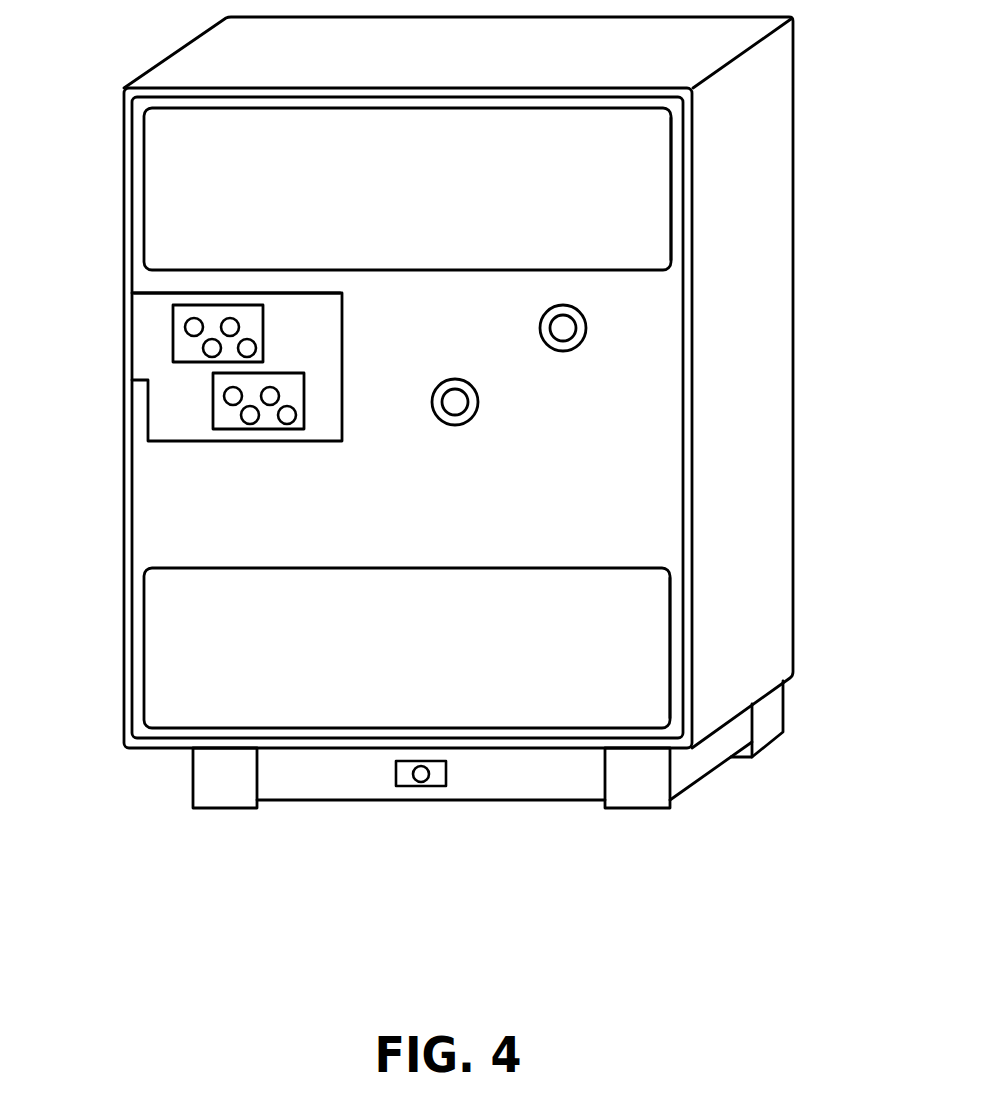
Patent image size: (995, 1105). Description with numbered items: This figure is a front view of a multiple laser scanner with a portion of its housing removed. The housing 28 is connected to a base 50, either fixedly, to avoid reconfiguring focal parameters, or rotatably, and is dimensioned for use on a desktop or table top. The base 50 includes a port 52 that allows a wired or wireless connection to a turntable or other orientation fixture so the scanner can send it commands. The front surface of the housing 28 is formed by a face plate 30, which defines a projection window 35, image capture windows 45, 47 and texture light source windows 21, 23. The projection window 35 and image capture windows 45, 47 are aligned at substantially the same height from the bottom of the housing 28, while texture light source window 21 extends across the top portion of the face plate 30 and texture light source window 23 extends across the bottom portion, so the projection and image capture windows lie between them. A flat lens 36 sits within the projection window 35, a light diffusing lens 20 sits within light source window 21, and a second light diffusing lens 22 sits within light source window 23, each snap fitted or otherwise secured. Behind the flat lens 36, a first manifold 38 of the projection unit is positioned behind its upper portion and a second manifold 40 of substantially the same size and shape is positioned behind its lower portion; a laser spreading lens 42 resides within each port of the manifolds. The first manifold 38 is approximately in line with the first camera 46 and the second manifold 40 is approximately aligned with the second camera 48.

The light diffusing lens 20 is at (172, 171).
The texture light source window 21 is at (673, 215).
The second light diffusing lens 22 is at (168, 630).
The texture light source window 23 is at (670, 613).
The housing 28 is at (775, 145).
The face plate 30 is at (650, 420).
The projection window 35 is at (342, 327).
The flat lens 36 is at (143, 312).
The first manifold 38 is at (173, 330).
The second manifold 40 is at (213, 403).
The laser spreading lens 42 is at (238, 324).
The image capture window 45 is at (588, 313).
The first camera 46 is at (575, 337).
The image capture window 47 is at (478, 388).
The second camera 48 is at (467, 408).
The base 50 is at (210, 778).
The port 52 is at (432, 786).